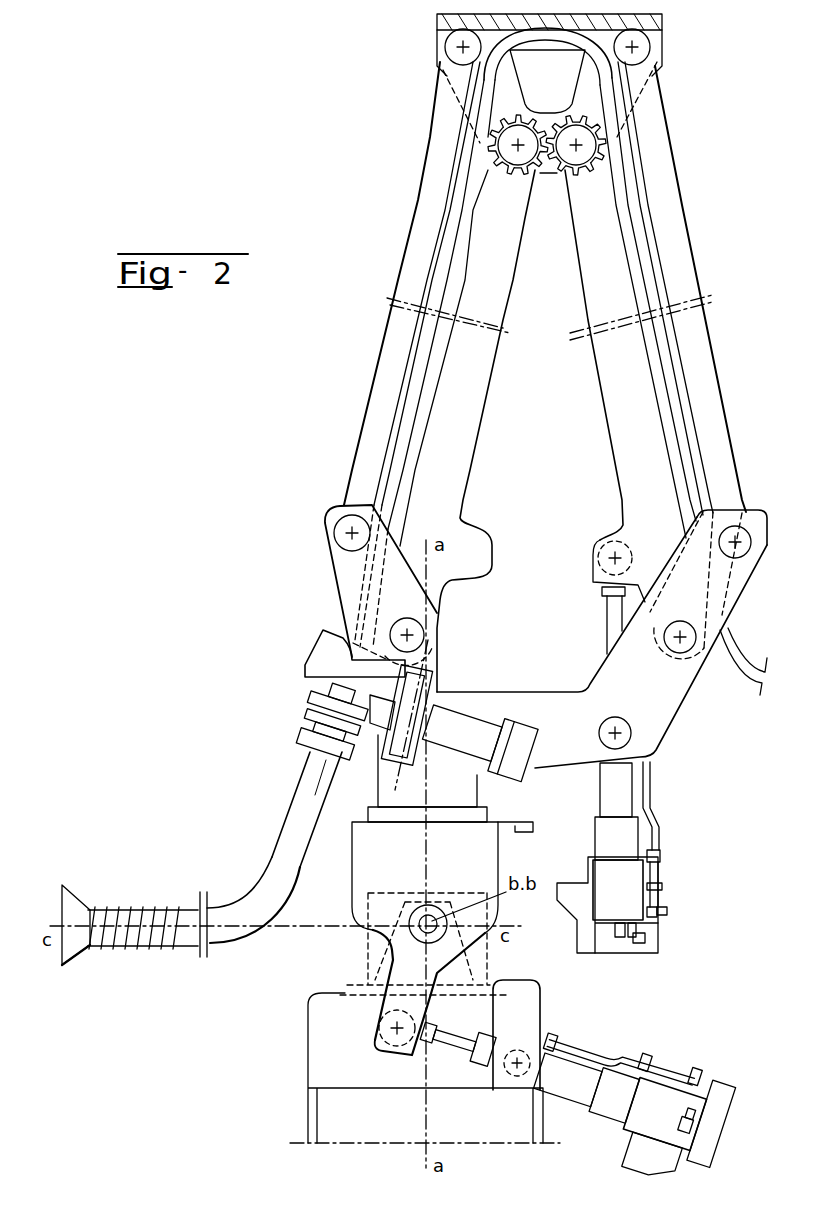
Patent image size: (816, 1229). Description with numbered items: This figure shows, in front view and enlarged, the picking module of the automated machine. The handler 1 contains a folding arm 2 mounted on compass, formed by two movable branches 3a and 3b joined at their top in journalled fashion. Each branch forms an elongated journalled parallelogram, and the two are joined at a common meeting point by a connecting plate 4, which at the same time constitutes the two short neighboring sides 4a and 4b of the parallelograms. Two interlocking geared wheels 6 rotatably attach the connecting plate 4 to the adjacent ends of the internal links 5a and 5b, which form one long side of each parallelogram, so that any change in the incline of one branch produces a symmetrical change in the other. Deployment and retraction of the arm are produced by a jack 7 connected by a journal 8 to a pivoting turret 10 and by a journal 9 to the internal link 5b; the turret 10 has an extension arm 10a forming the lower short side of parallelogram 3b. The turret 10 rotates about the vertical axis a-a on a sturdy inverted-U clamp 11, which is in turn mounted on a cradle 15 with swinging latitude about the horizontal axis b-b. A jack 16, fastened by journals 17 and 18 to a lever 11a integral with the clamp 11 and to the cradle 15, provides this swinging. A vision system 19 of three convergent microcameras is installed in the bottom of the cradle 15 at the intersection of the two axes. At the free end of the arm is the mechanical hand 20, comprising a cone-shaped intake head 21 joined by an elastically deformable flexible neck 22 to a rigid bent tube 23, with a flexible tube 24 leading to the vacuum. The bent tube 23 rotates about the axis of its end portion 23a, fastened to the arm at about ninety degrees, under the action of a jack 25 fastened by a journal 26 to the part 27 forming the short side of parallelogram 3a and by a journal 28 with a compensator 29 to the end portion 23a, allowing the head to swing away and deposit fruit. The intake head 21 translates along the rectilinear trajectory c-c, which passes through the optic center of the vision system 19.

The handler 1 is at (352, 100).
The folding arm 2 is at (495, 463).
The movable branch 3a is at (383, 232).
The movable branch 3b is at (700, 210).
The connecting plate 4 is at (680, 48).
The short neighboring side 4a is at (477, 85).
The short neighboring side 4b is at (625, 105).
The internal link 5a is at (443, 398).
The internal link 5b is at (627, 370).
The geared wheels 6 is at (480, 143).
The jack 7 is at (620, 800).
The journal 8 is at (633, 735).
The journal 9 is at (602, 545).
The pivoting turret 10 is at (568, 705).
The extension arm 10a is at (732, 590).
The clamp 11 is at (380, 875).
The lever 11a is at (403, 960).
The cradle 15 is at (463, 970).
The jack 16 is at (580, 1080).
The journal 17 is at (373, 1027).
The journal 18 is at (545, 1045).
The vision system 19 is at (363, 940).
The mechanical hand 20 is at (183, 868).
The intake head 21 is at (76, 892).
The flexible neck 22 is at (135, 908).
The rigid bent tube 23 is at (265, 880).
The end portion of bent tube 23a is at (310, 790).
The flexible tube 24 is at (410, 440).
The jack 25 is at (470, 740).
The journal 26 is at (438, 695).
The part constituting short side of parallelogram 27 is at (345, 572).
The journal 28 is at (330, 720).
The compensator 29 is at (312, 695).